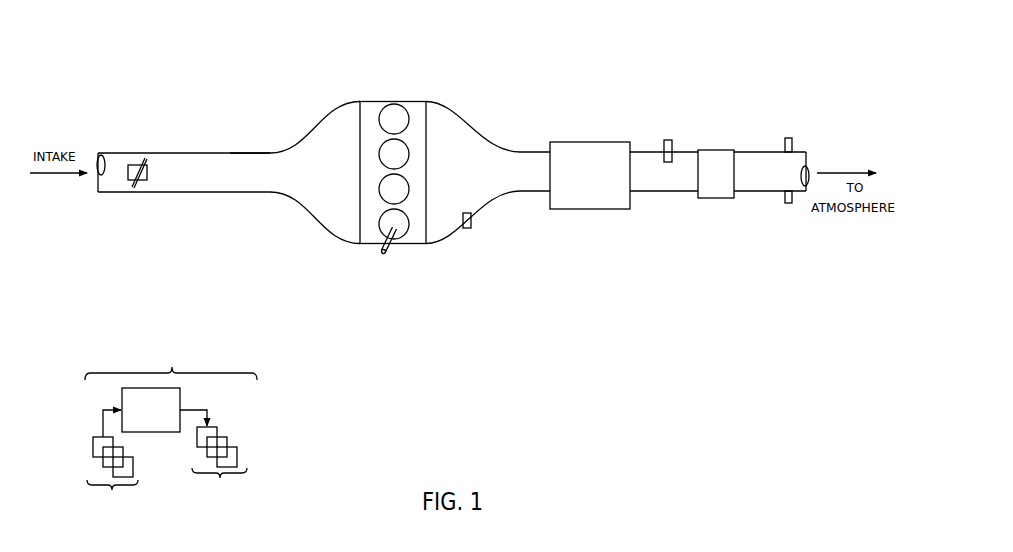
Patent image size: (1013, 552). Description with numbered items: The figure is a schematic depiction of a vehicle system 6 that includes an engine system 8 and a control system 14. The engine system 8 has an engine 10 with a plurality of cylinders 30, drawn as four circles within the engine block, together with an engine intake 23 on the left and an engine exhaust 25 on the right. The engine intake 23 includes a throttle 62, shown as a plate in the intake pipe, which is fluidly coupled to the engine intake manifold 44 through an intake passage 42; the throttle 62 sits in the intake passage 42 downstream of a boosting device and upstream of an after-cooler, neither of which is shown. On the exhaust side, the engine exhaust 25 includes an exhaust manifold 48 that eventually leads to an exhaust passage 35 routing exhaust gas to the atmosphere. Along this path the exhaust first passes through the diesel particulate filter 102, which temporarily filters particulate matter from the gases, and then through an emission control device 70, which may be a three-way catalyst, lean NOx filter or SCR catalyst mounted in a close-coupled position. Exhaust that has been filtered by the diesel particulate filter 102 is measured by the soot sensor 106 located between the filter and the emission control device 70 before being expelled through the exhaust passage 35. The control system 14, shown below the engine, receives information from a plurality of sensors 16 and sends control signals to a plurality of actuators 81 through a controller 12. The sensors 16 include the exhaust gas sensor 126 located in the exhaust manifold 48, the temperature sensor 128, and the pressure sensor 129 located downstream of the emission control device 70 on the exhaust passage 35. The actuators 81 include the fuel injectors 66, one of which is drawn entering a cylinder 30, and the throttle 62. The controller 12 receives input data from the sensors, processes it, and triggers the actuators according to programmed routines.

The vehicle system 6 is at (68, 60).
The engine system 8 is at (420, 83).
The engine 10 is at (427, 160).
The controller 12 is at (151, 410).
The control system 14 is at (171, 429).
The sensors 16 is at (112, 465).
The engine intake 23 is at (234, 139).
The engine exhaust 25 is at (478, 113).
The cylinders 30 is at (404, 113).
The exhaust passage 35 is at (763, 151).
The intake passage 42 is at (172, 192).
The engine intake manifold 44 is at (315, 173).
The exhaust manifold 48 is at (473, 173).
The throttle 62 is at (147, 178).
The fuel injectors 66 is at (394, 243).
The emission control device 70 is at (716, 174).
The actuators 81 is at (214, 459).
The diesel particulate filter 102 is at (590, 175).
The soot sensor 106 is at (665, 149).
The exhaust gas sensor 126 is at (471, 217).
The temperature sensor 128 is at (786, 196).
The pressure sensor 129 is at (786, 144).